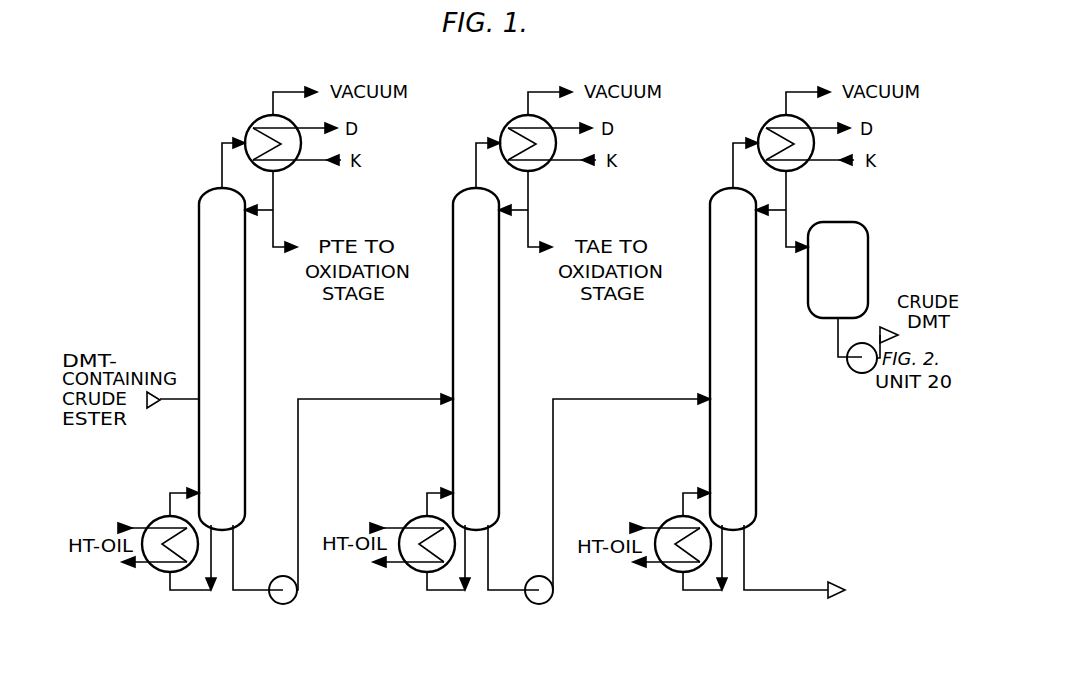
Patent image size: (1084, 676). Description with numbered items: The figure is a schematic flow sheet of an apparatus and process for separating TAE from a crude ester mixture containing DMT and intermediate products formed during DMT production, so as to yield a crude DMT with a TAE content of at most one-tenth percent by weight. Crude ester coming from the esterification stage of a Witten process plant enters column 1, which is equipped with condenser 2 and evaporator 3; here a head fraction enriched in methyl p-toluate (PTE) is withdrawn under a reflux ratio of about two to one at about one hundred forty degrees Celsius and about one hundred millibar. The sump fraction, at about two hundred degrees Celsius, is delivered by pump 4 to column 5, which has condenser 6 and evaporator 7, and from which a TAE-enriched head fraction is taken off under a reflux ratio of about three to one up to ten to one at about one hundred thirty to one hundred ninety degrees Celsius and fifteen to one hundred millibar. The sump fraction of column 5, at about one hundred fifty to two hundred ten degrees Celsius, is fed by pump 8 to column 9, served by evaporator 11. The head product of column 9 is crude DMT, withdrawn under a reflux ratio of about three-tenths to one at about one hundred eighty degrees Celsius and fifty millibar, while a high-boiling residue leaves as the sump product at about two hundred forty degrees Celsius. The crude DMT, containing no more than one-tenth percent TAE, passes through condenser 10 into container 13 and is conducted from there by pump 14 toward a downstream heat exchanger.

The column 1 is at (199, 206).
The condenser 2 is at (254, 118).
The evaporator 3 is at (160, 517).
The pump 4 is at (275, 605).
The column 5 is at (453, 204).
The condenser 6 is at (514, 118).
The evaporator 7 is at (413, 519).
The pump 8 is at (533, 605).
The column 9 is at (710, 206).
The condenser 10 is at (775, 118).
The evaporator 11 is at (671, 517).
The container 13 is at (856, 221).
The pump 14 is at (855, 373).